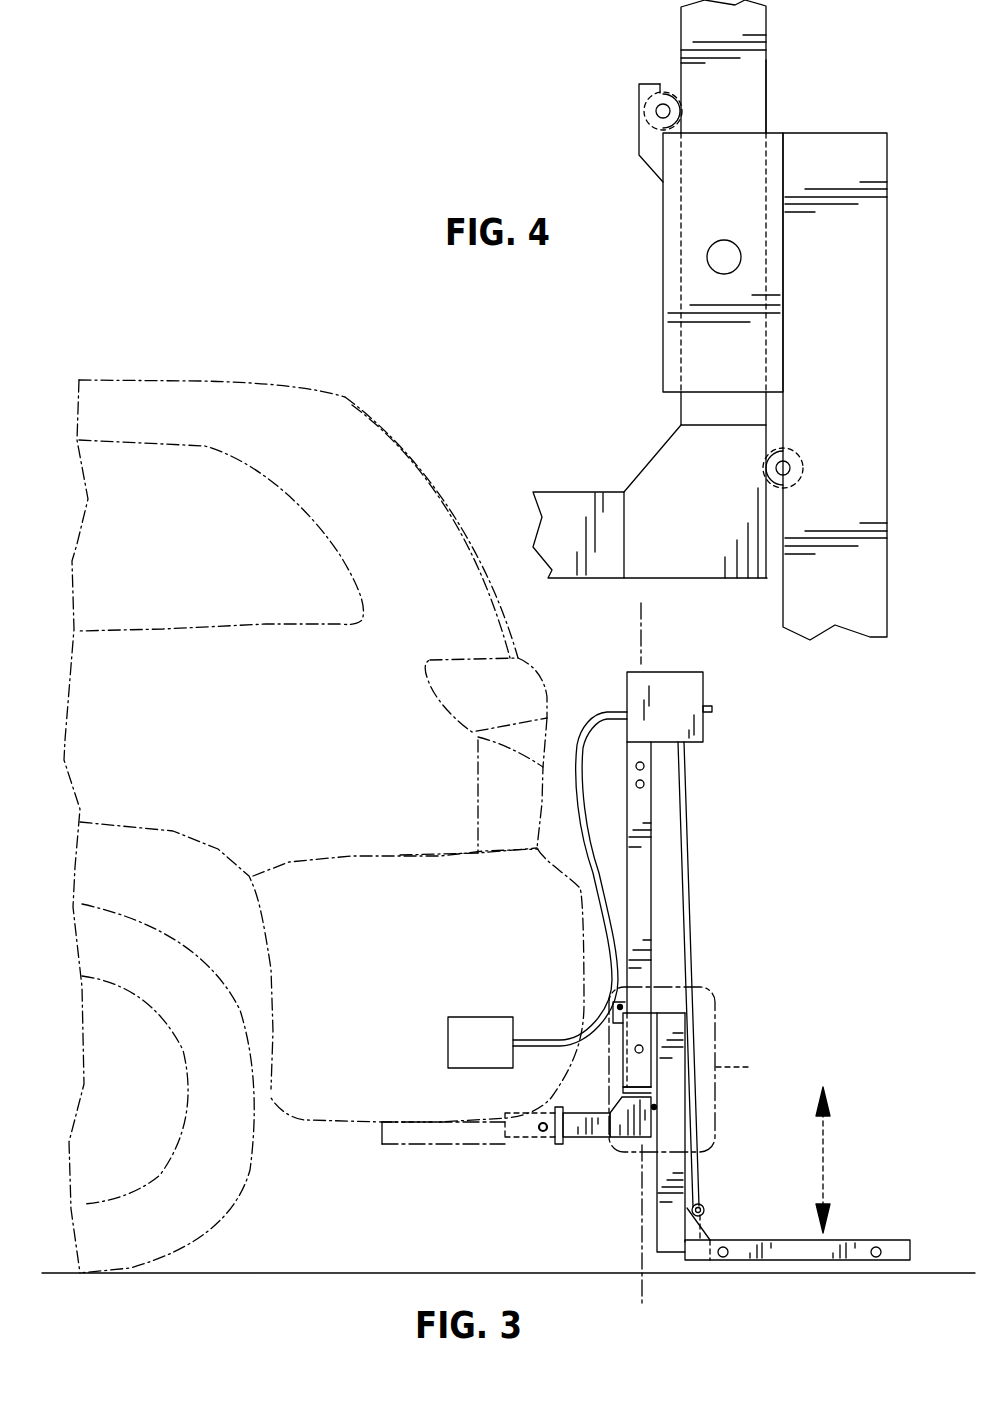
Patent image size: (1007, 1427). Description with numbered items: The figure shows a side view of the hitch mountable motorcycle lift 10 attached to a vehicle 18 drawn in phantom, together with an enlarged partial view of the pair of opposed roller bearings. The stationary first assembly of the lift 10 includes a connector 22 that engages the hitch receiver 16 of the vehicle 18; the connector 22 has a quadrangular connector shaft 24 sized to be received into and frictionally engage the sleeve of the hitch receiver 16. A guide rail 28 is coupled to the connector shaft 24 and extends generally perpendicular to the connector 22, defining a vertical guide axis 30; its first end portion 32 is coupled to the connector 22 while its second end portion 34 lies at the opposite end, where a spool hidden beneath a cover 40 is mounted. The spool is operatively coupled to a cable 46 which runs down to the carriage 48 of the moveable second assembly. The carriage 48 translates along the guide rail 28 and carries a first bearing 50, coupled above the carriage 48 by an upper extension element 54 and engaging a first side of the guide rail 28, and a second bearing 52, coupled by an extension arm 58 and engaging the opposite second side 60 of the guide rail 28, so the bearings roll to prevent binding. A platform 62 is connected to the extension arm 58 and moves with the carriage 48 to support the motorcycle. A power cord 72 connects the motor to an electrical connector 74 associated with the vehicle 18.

In FIG. 3, the lift 10 is at (765, 960).
In FIG. 3, the hitch receiver 16 is at (446, 1140).
In FIG. 3, the vehicle 18 is at (178, 392).
In FIG. 3, the connector 22 is at (580, 1141).
In FIG. 3, the connector shaft 24 is at (602, 1140).
In FIG. 4, the connector shaft 24 is at (565, 503).
In FIG. 3, the guide rail 28 is at (640, 885).
In FIG. 4, the guide rail 28 is at (680, 30).
In FIG. 3, the guide axis 30 is at (643, 1292).
In FIG. 4, the first end portion 32 is at (690, 408).
In FIG. 3, the second end portion 34 is at (645, 782).
In FIG. 3, the cover 40 is at (692, 685).
In FIG. 3, the cable 46 is at (690, 933).
In FIG. 3, the carriage 48 is at (645, 1030).
In FIG. 4, the first bearing 50 is at (673, 88).
In FIG. 4, the second bearing 52 is at (775, 490).
In FIG. 4, the upper extension element 54 is at (648, 138).
In FIG. 3, the extension arm 58 is at (672, 1167).
In FIG. 4, the extension arm 58 is at (867, 605).
In FIG. 4, the second side 60 is at (767, 110).
In FIG. 3, the platform 62 is at (862, 1243).
In FIG. 3, the power cord 72 is at (588, 710).
In FIG. 3, the electrical connector 74 is at (466, 1057).